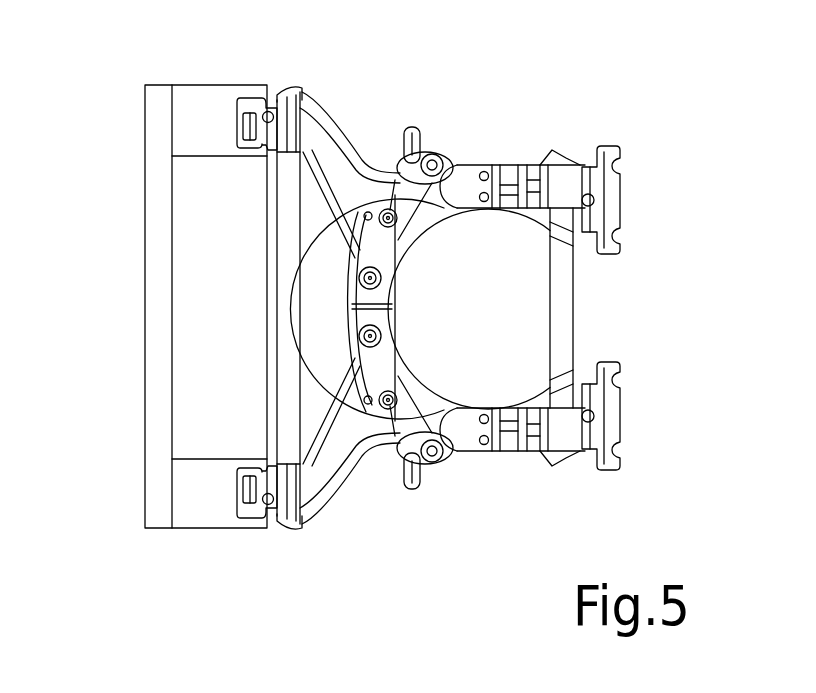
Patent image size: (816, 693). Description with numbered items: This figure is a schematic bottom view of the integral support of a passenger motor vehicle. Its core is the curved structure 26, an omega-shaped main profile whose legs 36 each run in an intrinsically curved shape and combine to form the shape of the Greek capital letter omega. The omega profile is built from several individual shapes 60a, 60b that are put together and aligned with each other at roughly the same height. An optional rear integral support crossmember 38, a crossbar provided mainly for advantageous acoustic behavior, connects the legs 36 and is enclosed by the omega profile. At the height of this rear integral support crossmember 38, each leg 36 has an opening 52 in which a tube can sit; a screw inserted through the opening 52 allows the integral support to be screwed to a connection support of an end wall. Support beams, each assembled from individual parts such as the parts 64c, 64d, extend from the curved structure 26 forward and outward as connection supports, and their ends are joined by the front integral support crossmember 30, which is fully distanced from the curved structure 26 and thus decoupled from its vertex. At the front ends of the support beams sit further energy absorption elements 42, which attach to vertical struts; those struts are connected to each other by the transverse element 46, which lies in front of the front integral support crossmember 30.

The curved structure 26 is at (348, 265).
The front integral support crossmember 30 is at (282, 330).
The leg 36 is at (465, 182).
The rear integral support crossmember 38 is at (563, 312).
The further energy absorption element 42 is at (219, 100).
The transverse element 46 is at (150, 297).
The opening 52 is at (576, 176).
The individual shape 60a is at (507, 437).
The individual shape 60b is at (507, 170).
The individual part 64c is at (357, 440).
The individual part 64d is at (357, 172).